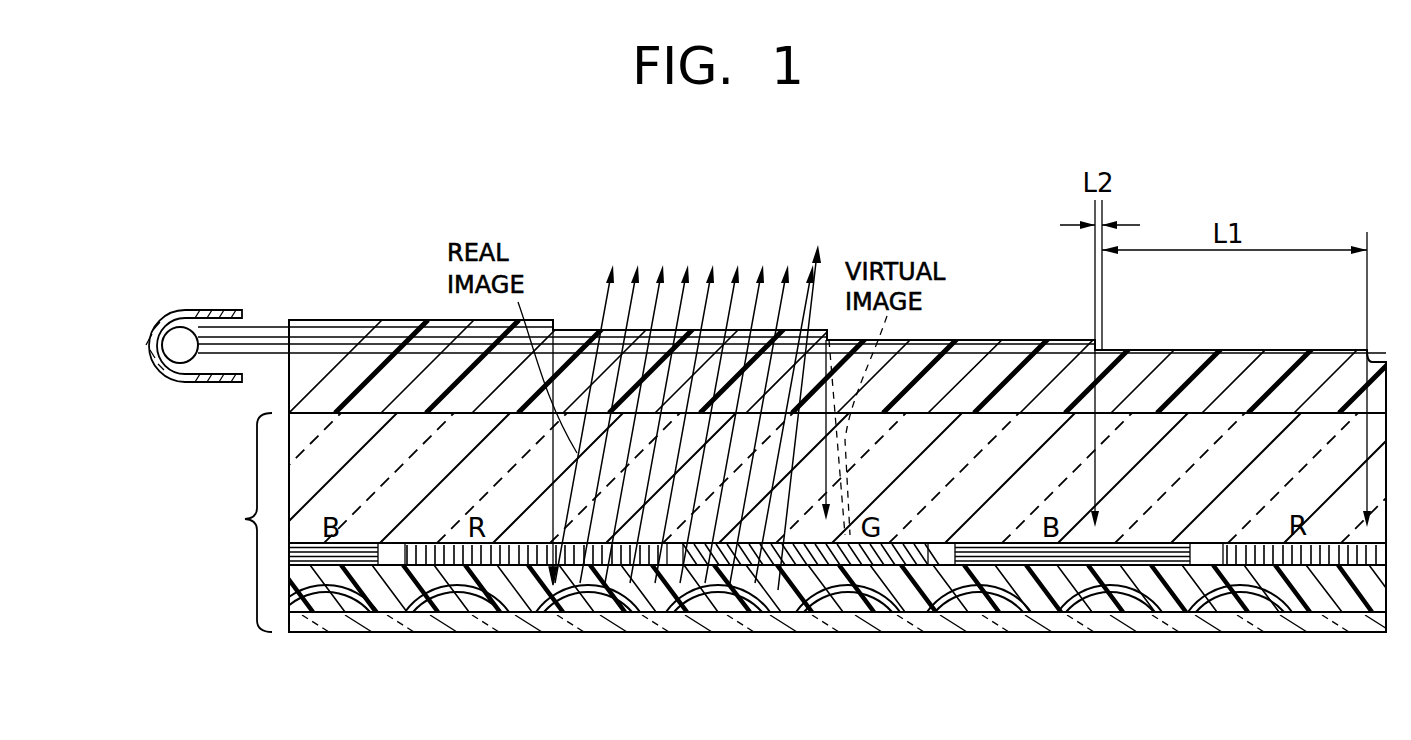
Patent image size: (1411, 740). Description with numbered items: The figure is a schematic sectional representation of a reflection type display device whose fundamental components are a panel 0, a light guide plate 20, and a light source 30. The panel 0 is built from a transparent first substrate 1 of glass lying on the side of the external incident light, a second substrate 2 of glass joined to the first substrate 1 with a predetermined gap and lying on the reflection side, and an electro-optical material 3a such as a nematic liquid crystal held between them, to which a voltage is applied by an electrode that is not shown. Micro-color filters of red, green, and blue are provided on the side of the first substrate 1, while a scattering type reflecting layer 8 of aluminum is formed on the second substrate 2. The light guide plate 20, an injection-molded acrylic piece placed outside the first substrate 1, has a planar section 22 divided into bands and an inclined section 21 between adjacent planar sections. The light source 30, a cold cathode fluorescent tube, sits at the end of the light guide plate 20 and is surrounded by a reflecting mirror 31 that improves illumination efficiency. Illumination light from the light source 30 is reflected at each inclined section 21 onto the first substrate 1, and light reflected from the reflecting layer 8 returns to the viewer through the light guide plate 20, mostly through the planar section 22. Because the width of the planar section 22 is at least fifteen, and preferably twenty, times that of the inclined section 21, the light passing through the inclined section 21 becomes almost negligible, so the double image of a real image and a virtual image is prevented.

The panel 0 is at (245, 519).
The first substrate 1 is at (325, 448).
The second substrate 2 is at (468, 626).
The electro-optical material 3a is at (337, 575).
The scattering type reflecting layer 8 is at (912, 614).
The light guide plate 20 is at (993, 383).
The inclined section 21 is at (557, 320).
The planar section 22 is at (392, 320).
The light source 30 is at (172, 346).
The reflecting mirror 31 is at (200, 310).